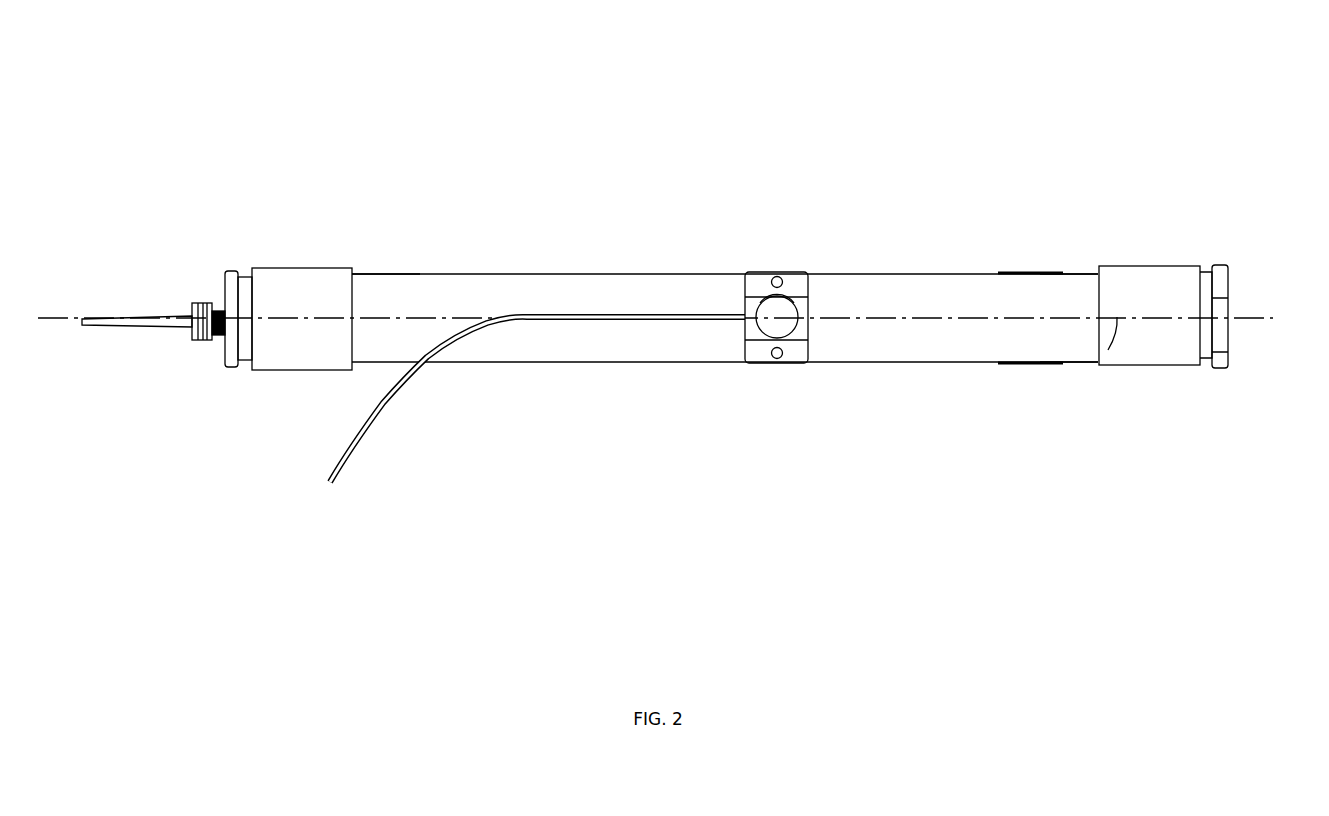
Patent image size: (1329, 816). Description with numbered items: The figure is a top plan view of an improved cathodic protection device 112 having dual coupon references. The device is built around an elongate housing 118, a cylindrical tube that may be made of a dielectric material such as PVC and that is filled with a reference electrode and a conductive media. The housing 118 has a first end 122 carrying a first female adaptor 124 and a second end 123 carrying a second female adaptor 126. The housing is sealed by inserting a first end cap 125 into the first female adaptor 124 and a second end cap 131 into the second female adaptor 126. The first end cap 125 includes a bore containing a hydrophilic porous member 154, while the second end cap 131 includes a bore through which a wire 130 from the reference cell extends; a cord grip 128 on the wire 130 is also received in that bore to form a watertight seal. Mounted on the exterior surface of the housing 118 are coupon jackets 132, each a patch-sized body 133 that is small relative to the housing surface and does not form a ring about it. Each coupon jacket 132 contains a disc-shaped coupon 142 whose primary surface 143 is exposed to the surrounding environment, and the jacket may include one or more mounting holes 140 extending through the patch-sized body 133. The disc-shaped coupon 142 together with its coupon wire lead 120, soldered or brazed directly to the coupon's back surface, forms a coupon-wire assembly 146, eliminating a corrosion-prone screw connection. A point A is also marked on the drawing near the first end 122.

The improved cathodic protection device 112 is at (438, 150).
The elongate housing 118 is at (932, 275).
The coupon wire lead 120 is at (680, 323).
The first end 122 is at (1083, 270).
The second end 123 is at (357, 275).
The first female adaptor 124 is at (1132, 355).
The first end cap 125 is at (1217, 267).
The second female adaptor 126 is at (288, 352).
The cord grip 128 is at (217, 343).
The wire 130 is at (102, 315).
The second end cap 131 is at (227, 268).
The coupon jacket 132 is at (760, 275).
The patch-sized body 133 is at (758, 358).
The mounting holes 140 is at (777, 277).
The disc-shaped coupon 142 is at (792, 323).
The primary surface 143 is at (778, 302).
The coupon-wire assembly 146 is at (823, 261).
The hydrophilic porous member 154 is at (1230, 323).
The point A is at (1108, 350).